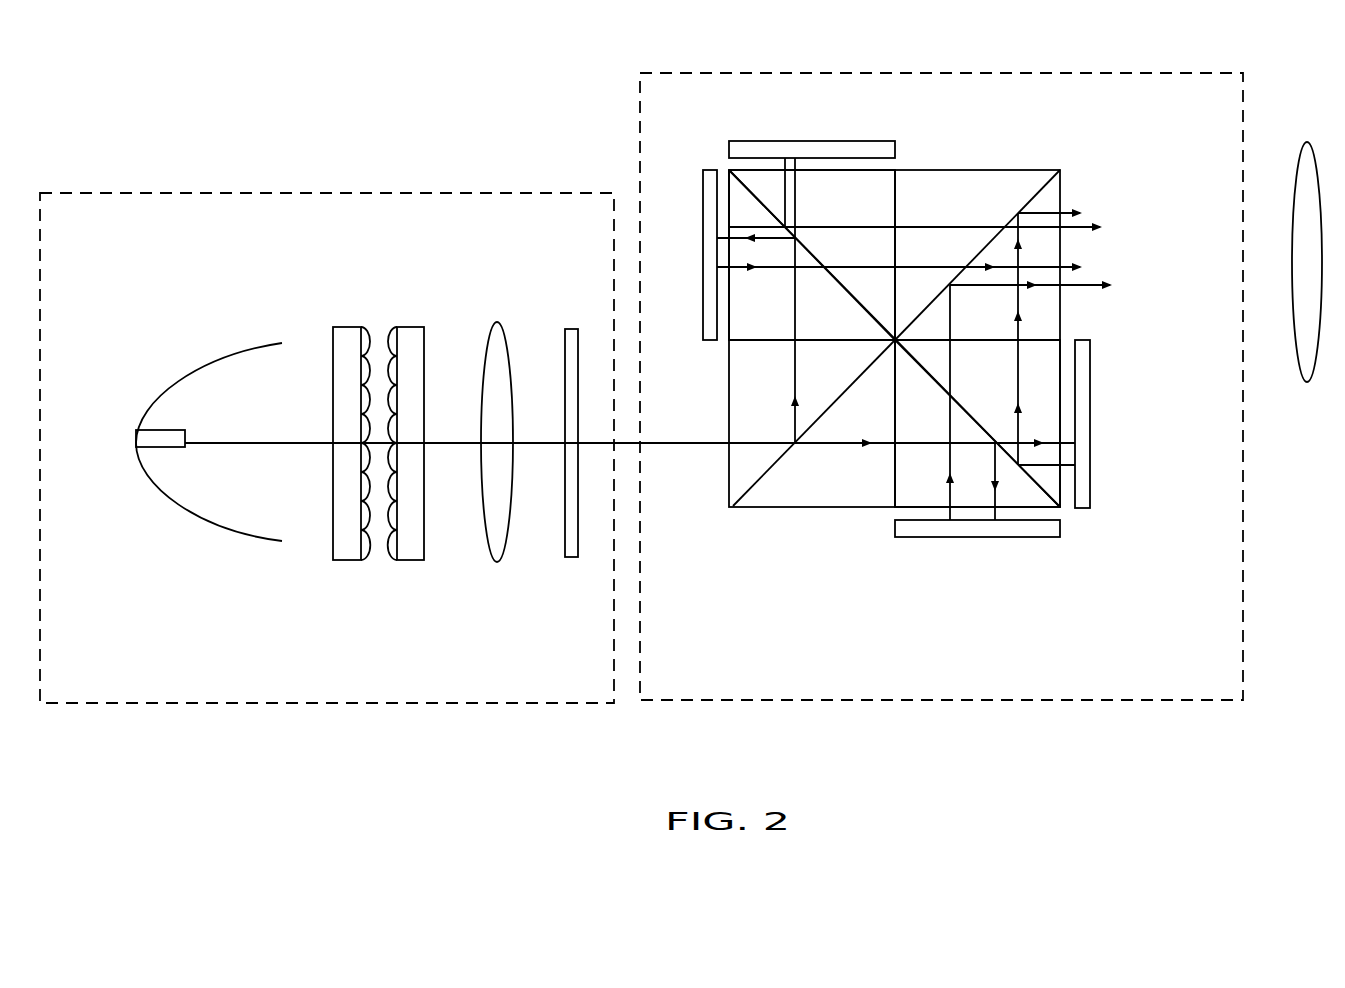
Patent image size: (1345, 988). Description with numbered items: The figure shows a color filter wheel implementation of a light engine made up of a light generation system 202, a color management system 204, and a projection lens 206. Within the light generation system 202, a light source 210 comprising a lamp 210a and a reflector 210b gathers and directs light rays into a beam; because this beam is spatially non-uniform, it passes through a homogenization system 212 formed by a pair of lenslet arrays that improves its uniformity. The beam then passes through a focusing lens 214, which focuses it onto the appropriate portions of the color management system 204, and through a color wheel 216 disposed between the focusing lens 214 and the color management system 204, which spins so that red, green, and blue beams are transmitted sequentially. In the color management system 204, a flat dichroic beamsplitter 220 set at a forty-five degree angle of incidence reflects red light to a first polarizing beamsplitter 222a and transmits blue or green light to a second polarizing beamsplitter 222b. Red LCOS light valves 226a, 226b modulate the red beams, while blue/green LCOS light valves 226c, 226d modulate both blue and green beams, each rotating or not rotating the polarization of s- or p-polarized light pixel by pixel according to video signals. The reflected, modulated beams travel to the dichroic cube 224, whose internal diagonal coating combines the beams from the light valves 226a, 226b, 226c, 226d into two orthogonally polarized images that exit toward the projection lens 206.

The light generation system 202 is at (327, 467).
The color management system 204 is at (941, 423).
The projection lens 206 is at (1253, 207).
The light source 210 is at (172, 460).
The lamp 210a is at (158, 428).
The reflector 210b is at (218, 355).
The homogenization system 212 is at (378, 394).
The focusing lens 214 is at (490, 547).
The color wheel 216 is at (563, 553).
The dichroic beamsplitter 220 is at (758, 487).
The first polarizing beamsplitter 222a is at (758, 368).
The second polarizing beamsplitter 222b is at (873, 468).
The dichroic cube 224 is at (948, 191).
The red LCOS light valve 226a is at (702, 175).
The red LCOS light valve 226b is at (778, 140).
The blue/green LCOS light valve 226c is at (1090, 382).
The blue/green LCOS light valve 226d is at (1007, 537).